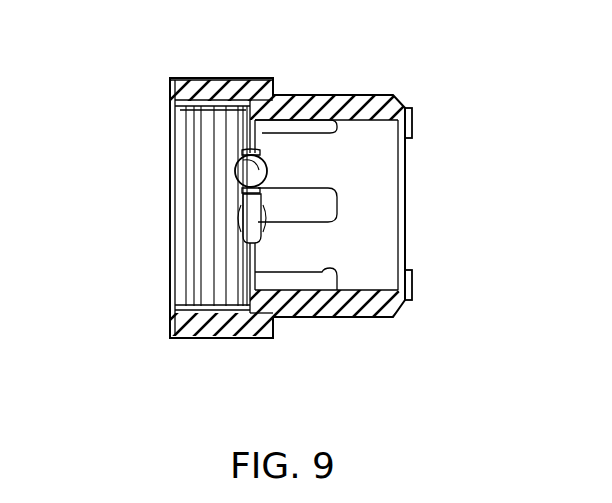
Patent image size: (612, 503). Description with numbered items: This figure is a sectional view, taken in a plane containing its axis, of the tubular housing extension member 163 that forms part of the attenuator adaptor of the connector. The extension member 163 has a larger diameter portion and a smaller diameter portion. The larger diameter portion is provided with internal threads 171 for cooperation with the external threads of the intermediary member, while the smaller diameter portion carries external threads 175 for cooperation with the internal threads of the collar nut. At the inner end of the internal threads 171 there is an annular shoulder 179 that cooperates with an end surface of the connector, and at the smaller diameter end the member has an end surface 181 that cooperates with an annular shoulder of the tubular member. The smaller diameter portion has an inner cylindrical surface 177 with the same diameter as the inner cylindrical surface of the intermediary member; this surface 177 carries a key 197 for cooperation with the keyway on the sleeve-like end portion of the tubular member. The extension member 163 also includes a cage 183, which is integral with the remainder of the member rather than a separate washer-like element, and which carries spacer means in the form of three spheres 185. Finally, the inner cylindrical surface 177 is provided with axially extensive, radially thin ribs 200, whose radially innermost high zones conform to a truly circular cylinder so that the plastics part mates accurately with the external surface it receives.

The housing extension member 163 is at (286, 68).
The internal threads 171 is at (185, 116).
The external threads 175 is at (363, 98).
The inner cylindrical surface 177 is at (413, 137).
The annular shoulder 179 is at (263, 294).
The end surface 181 is at (413, 112).
The cage 183 is at (247, 143).
The spheres 185 is at (236, 168).
The key 197 is at (383, 283).
The ribs 200 is at (318, 133).